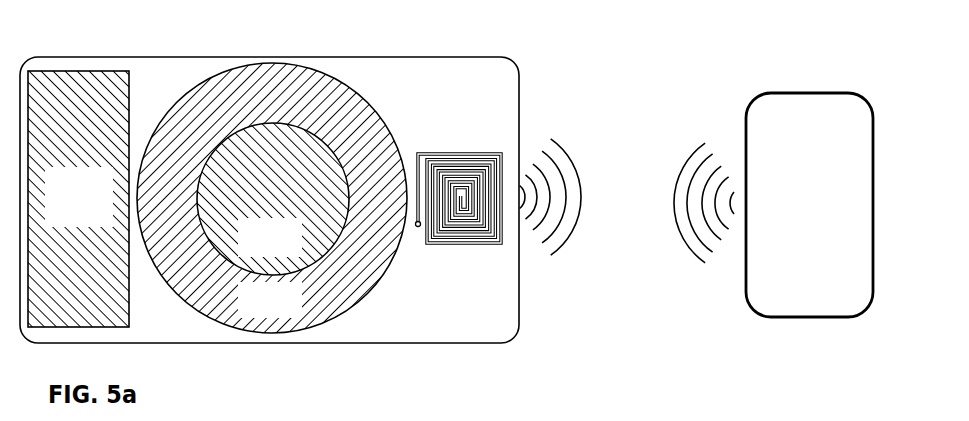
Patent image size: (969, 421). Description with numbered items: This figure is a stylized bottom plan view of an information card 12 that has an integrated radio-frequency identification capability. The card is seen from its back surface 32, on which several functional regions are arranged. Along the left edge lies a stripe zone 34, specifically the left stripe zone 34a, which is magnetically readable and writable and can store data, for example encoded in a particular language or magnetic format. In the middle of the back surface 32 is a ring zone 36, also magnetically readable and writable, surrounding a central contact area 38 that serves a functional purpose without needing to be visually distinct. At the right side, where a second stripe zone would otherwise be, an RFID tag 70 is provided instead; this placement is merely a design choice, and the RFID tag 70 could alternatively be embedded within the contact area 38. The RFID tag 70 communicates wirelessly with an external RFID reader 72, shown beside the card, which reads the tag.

The information card 12 is at (311, 179).
The back surface 32 is at (390, 86).
The stripe zones 34 is at (78, 199).
The left stripe zone 34a is at (100, 224).
The ring zone 36 is at (283, 310).
The contact area 38 is at (283, 248).
The RFID tag 70 is at (462, 246).
The external RFID reader 72 is at (823, 216).